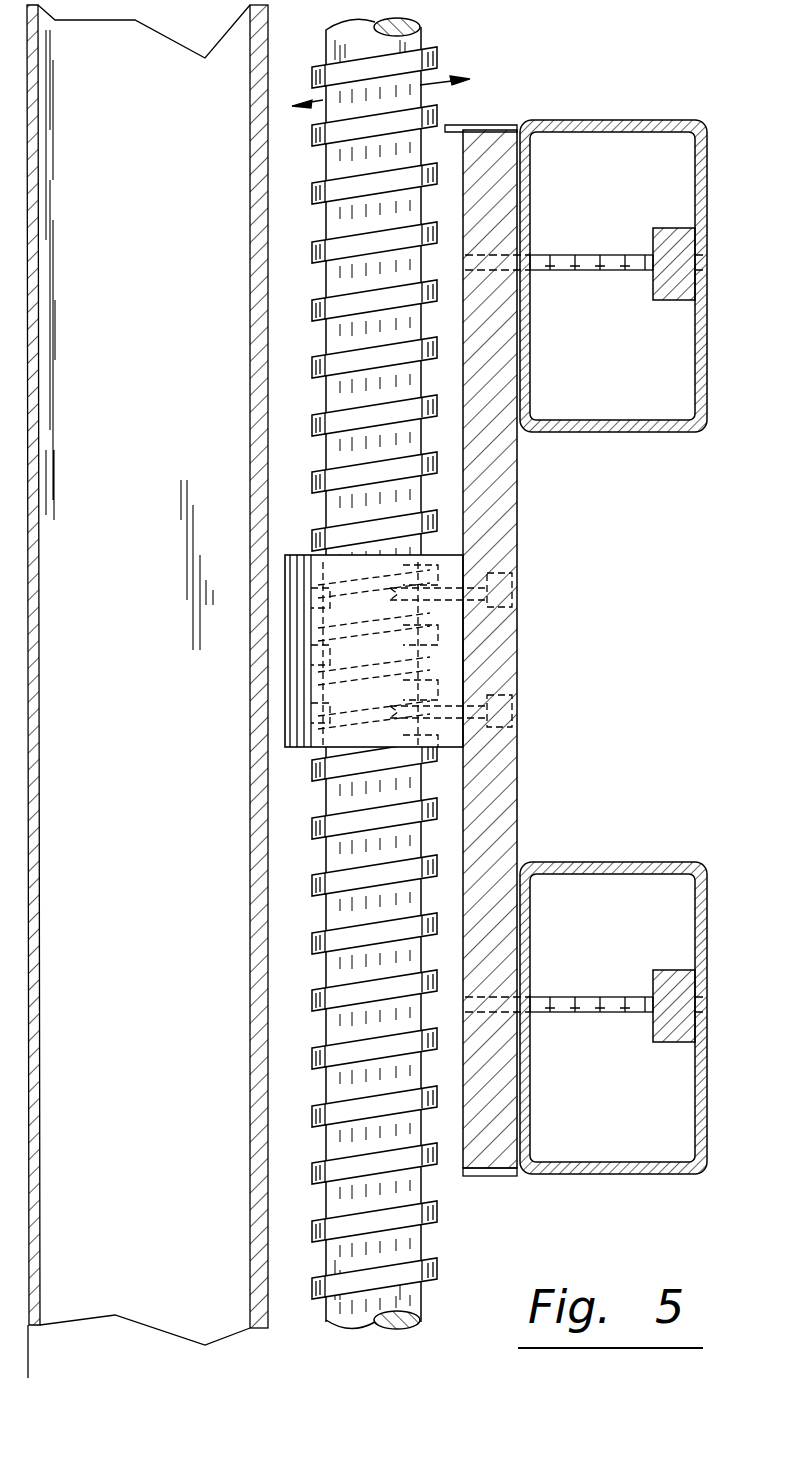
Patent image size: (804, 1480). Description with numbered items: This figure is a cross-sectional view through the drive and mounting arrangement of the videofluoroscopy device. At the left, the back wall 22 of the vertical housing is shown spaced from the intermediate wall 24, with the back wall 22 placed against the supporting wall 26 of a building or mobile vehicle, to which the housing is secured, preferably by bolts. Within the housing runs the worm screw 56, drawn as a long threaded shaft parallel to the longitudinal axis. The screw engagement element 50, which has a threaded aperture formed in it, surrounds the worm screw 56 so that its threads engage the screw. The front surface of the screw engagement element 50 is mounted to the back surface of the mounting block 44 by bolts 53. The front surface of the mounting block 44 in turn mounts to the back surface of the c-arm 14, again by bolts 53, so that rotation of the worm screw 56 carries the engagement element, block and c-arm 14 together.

The c-arm 14 is at (640, 120).
The back wall 22 is at (37, 603).
The intermediate wall 24 is at (250, 372).
The supporting wall 26 is at (29, 1348).
The mounting block 44 is at (486, 135).
The screw engagement element 50 is at (285, 713).
The bolts 53 is at (585, 255).
The worm screw 56 is at (441, 57).